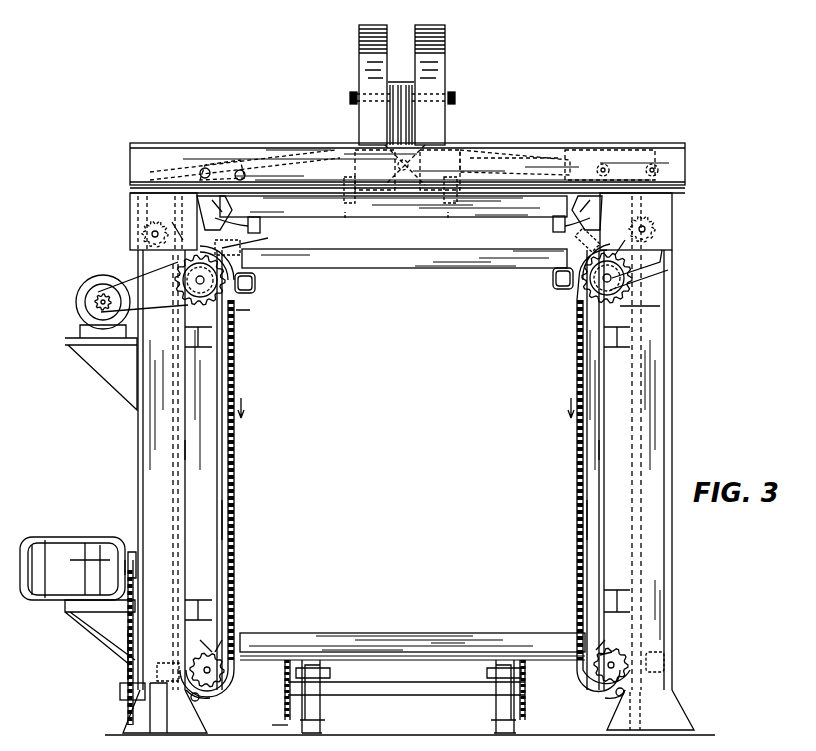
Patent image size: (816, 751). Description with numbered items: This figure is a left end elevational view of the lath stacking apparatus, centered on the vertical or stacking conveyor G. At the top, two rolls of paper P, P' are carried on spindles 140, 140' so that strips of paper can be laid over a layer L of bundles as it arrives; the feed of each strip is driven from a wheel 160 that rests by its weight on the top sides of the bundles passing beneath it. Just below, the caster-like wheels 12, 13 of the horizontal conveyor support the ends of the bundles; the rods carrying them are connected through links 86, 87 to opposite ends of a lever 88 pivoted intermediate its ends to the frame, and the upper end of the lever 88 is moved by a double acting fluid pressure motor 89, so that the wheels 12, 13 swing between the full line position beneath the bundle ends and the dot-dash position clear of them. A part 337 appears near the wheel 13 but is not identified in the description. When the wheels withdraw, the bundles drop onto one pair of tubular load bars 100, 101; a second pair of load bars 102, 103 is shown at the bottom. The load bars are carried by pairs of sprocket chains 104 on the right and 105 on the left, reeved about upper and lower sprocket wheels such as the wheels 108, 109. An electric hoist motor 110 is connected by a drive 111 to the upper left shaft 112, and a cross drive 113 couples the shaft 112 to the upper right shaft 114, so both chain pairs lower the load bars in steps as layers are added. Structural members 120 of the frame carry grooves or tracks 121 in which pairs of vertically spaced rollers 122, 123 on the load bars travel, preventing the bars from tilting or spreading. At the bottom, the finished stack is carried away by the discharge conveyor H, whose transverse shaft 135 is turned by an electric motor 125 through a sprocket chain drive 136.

The strip of paper P is at (356, 85).
The strip of paper P' is at (448, 85).
The spindle 140 is at (349, 90).
The spindle 140' is at (461, 90).
The link 87 is at (302, 150).
The double acting fluid pressure motor 89 is at (510, 160).
The link 86 is at (560, 175).
The lever 88 is at (407, 186).
The layer tray L is at (422, 217).
The wheel 160 is at (346, 215).
The cross drive 113 is at (145, 213).
The wheel 13 is at (262, 224).
The bracket 337 is at (244, 245).
The wheel 12 is at (553, 222).
The vertical conveyor G is at (236, 468).
The tracks 121 is at (232, 494).
The shaft 112 is at (196, 291).
The shaft 114 is at (630, 284).
The sprocket wheel 108 is at (236, 317).
The electric hoist motor 110 is at (88, 292).
The drive 111 is at (128, 272).
The load bar 101 is at (256, 284).
The load bar 100 is at (553, 285).
The structural members 120 is at (215, 448).
The sprocket chains 105 is at (233, 523).
The sprocket chains 104 is at (578, 524).
The electric motor 125 is at (66, 545).
The sprocket chain drive 136 is at (127, 633).
The sprocket wheel 109 is at (212, 640).
The roller 122 is at (410, 637).
The load bar 103 is at (162, 660).
The load bar 102 is at (660, 655).
The roller 123 is at (200, 700).
The shaft 135 is at (382, 697).
The discharge conveyor H is at (272, 725).